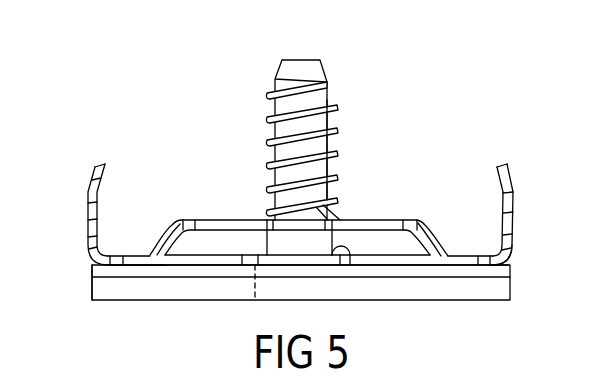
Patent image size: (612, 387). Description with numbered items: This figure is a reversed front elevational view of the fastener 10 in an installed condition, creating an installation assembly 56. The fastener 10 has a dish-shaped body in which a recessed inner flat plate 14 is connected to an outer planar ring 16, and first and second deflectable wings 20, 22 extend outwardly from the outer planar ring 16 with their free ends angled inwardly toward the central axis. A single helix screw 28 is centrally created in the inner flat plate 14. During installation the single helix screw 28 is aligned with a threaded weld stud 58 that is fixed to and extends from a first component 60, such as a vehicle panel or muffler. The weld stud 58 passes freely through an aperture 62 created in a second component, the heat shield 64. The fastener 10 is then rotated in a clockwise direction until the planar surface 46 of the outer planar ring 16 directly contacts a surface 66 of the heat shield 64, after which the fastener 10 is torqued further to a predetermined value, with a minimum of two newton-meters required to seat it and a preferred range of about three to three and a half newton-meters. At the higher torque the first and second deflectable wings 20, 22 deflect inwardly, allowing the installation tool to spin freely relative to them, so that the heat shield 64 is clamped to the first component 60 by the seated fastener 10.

The fastener 10 is at (175, 216).
The inner flat plate 14 is at (367, 225).
The outer planar ring 16 is at (387, 262).
The first deflectable wing 20 is at (512, 195).
The second deflectable wing 22 is at (92, 202).
The single helix screw 28 is at (343, 256).
The planar surface 46 is at (149, 268).
The installation assembly 56 is at (480, 92).
The threaded weld stud 58 is at (320, 118).
The first component 60 is at (500, 290).
The aperture 62 is at (255, 300).
The heat shield 64 is at (93, 273).
The surface 66 is at (513, 257).